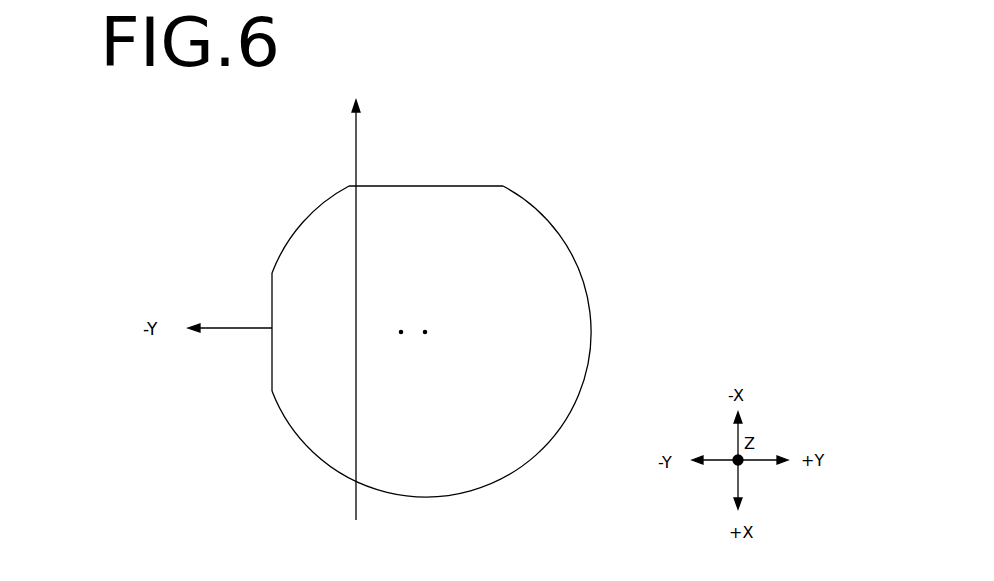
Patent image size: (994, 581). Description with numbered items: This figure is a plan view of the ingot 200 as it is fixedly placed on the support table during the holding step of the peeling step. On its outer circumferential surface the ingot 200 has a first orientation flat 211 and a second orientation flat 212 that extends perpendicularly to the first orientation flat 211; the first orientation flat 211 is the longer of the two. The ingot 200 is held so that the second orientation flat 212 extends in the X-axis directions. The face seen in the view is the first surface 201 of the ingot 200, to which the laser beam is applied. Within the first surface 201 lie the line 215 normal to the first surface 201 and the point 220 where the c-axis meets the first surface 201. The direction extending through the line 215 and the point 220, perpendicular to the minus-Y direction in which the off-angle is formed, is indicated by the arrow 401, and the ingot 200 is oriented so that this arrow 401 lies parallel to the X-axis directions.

The ingot 200 is at (424, 300).
The first surface 201 is at (556, 330).
The first orientation flat 211 is at (445, 186).
The second orientation flat 212 is at (272, 310).
The line normal to the first surface 215 is at (426, 331).
The point of intersection 220 is at (401, 331).
The arrow 401 is at (354, 293).